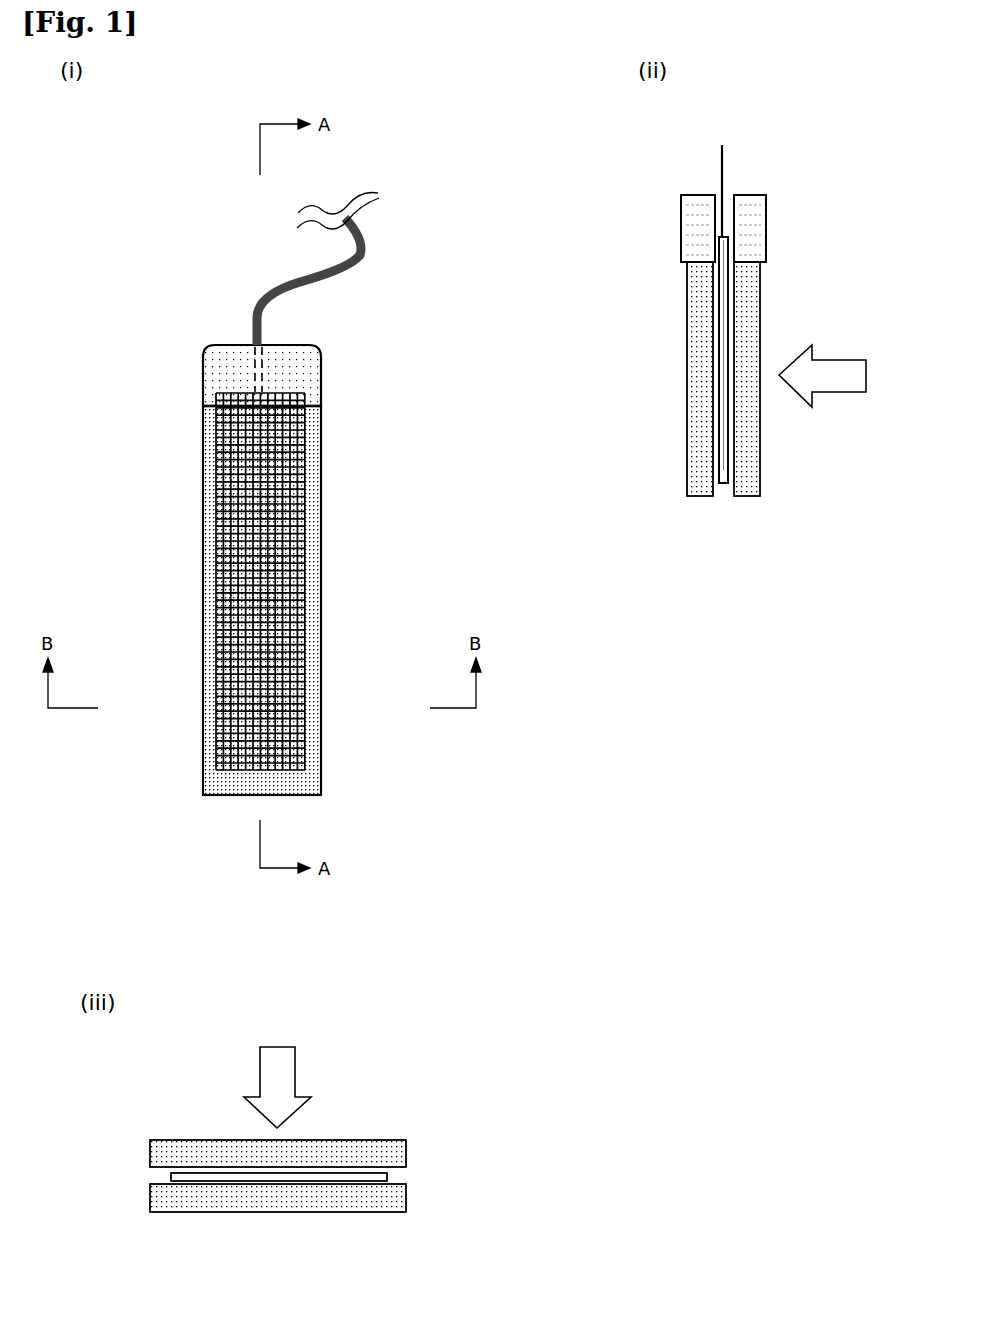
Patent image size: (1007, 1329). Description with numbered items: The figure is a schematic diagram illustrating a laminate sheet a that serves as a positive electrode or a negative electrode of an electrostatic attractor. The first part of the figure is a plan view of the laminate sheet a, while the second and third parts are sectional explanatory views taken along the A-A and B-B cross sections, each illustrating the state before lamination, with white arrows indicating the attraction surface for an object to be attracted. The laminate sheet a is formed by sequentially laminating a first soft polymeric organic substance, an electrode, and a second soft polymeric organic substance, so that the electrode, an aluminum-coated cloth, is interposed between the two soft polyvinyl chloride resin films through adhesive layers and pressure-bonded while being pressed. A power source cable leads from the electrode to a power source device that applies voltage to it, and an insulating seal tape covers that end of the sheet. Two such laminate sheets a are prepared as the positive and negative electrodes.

The laminate sheet a is at (158, 246).